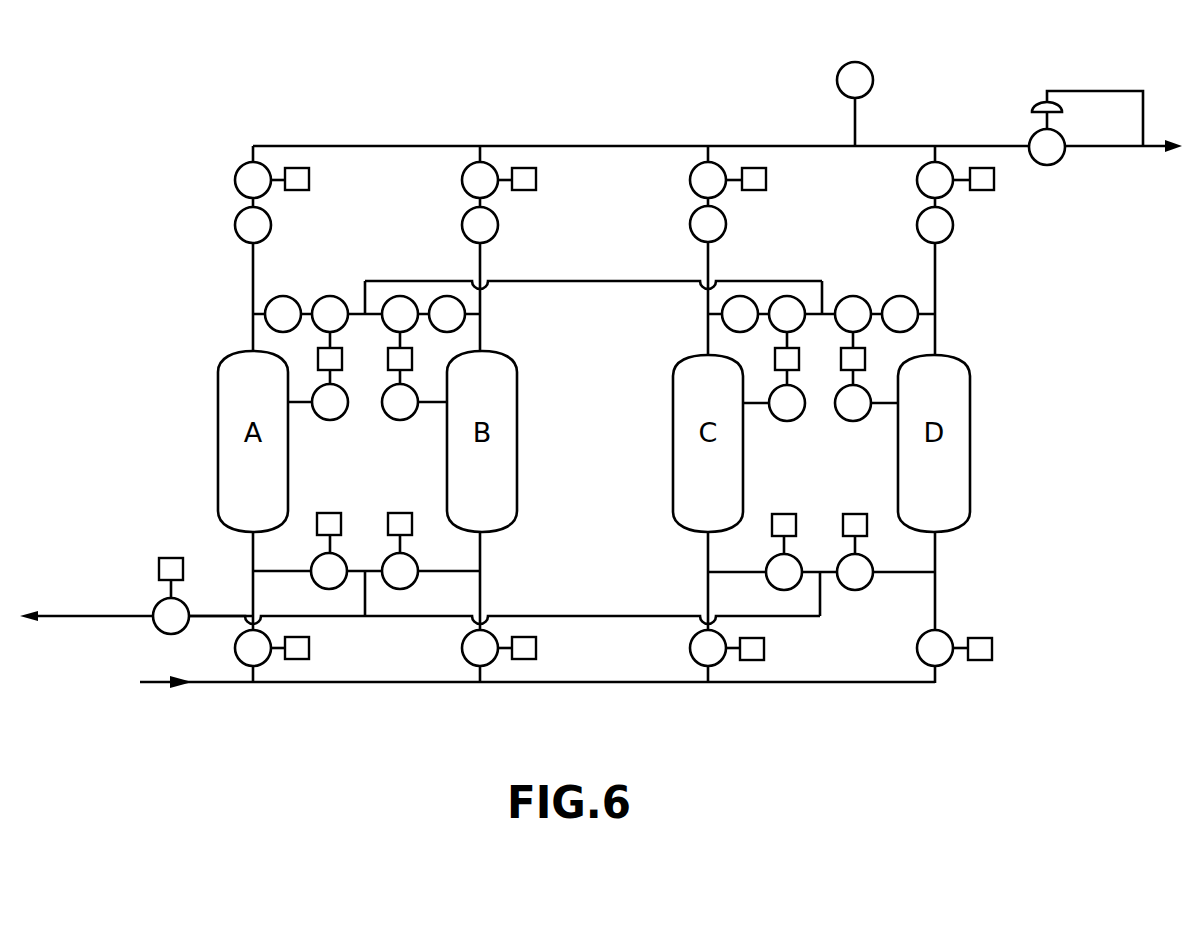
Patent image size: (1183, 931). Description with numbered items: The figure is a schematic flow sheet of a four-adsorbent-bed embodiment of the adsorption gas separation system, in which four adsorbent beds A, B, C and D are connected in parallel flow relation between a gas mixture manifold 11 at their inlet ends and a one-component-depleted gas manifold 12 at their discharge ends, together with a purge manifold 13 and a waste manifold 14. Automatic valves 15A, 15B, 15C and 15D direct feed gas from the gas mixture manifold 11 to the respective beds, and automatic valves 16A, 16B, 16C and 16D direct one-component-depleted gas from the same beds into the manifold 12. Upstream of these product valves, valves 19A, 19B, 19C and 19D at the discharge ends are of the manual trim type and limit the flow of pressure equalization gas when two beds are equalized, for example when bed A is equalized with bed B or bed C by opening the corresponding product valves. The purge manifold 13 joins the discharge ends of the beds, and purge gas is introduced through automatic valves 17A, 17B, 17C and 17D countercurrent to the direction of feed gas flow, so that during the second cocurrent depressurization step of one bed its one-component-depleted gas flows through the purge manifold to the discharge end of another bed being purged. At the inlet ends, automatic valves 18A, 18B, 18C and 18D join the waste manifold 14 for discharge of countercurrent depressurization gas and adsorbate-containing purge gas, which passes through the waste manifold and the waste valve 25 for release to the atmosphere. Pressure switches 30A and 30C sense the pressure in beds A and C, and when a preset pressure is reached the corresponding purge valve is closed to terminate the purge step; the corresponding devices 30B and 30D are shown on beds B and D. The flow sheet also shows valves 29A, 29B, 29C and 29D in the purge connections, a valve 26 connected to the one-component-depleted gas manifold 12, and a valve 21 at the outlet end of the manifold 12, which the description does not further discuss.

The gas mixture manifold 11 is at (540, 683).
The one-component-depleted gas manifold 12 is at (776, 146).
The purge manifold 13 is at (546, 281).
The waste manifold 14 is at (577, 616).
The automatic valve 15A is at (235, 648).
The automatic valve 15B is at (462, 648).
The automatic valve 15C is at (690, 648).
The inlet valve to vessel D 15D is at (917, 648).
The automatic valve 16A is at (238, 171).
The automatic valve 16B is at (466, 172).
The automatic valve 16C is at (694, 172).
The outlet valve from vessel D 16D is at (922, 174).
The automatic valve 17A is at (330, 296).
The automatic valve 17B is at (410, 328).
The automatic valve 17C is at (787, 296).
The valve 17D is at (854, 296).
The automatic valve 18A is at (322, 588).
The automatic valve 18B is at (406, 589).
The automatic valve 18C is at (782, 590).
The valve 18D is at (858, 590).
The manual trim valve 19A is at (235, 225).
The manual trim valve 19B is at (462, 226).
The manual trim valve 19C is at (690, 225).
The valve 19D is at (917, 227).
The back-pressure control valve 21 is at (1046, 165).
The waste valve 25 is at (160, 631).
The valve 26 is at (855, 62).
The valve 29A is at (284, 296).
The valve 29B is at (458, 320).
The valve 29C is at (728, 330).
The valve 29D is at (893, 331).
The pressure switch 30A is at (333, 420).
The valve 30B is at (403, 420).
The pressure switch 30C is at (789, 421).
The valve 30D is at (855, 421).